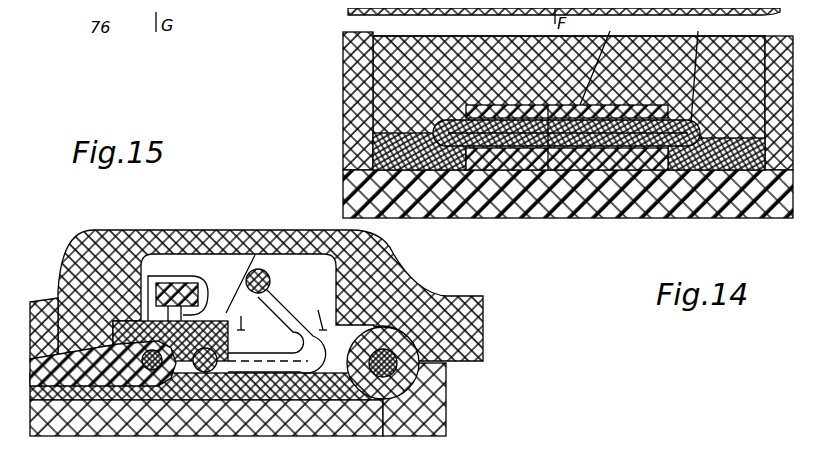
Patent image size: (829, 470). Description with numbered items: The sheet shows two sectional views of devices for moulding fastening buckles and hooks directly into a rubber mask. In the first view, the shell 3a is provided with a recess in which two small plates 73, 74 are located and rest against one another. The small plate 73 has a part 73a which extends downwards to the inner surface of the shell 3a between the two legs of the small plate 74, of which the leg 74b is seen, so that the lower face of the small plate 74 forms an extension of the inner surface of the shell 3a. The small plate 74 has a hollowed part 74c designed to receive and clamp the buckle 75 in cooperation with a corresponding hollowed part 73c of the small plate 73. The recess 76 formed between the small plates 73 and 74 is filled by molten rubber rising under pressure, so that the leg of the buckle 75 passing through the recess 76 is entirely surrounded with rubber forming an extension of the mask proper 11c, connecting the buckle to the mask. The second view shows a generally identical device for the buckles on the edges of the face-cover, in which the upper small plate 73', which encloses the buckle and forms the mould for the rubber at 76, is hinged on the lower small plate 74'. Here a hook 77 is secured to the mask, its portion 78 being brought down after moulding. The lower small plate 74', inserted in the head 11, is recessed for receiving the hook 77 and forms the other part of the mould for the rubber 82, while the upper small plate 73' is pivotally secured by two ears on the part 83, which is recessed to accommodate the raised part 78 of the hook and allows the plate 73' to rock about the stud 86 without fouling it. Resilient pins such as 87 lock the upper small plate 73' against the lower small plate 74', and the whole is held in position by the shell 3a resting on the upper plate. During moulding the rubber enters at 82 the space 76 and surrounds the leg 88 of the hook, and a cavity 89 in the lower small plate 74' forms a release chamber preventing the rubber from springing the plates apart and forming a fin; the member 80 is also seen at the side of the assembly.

In FIG. 14, the shell 3a is at (350, 72).
In FIG. 15, the shell 3a is at (385, 273).
In FIG. 14, the small plate 73 is at (569, 91).
In FIG. 14, the part of small plate 73a is at (490, 6).
In FIG. 14, the hollowed part 73c is at (440, 115).
In FIG. 14, the buckle 75 is at (646, 69).
In FIG. 14, the small plate 74 is at (387, 151).
In FIG. 14, the leg of small plate 74b is at (712, 150).
In FIG. 14, the hollowed part 74c is at (434, 142).
In FIG. 14, the recess 76 is at (543, 163).
In FIG. 15, the recess 76 is at (145, 362).
In FIG. 14, the mask proper 11c is at (334, 184).
In FIG. 15, the side member 80 is at (49, 303).
In FIG. 15, the rubber entry 82 is at (100, 388).
In FIG. 15, the part 83 is at (398, 367).
In FIG. 15, the stud 86 is at (378, 429).
In FIG. 15, the resilient pin 87 is at (197, 277).
In FIG. 15, the leg of hook 88 is at (151, 276).
In FIG. 15, the cavity 89 is at (171, 387).
In FIG. 15, the raised part of hook 78 is at (268, 286).
In FIG. 15, the hook 77 is at (257, 360).
In FIG. 15, the upper small plate 73' is at (277, 292).
In FIG. 15, the lower small plate 74' is at (206, 417).
In FIG. 15, the head 11 is at (231, 410).